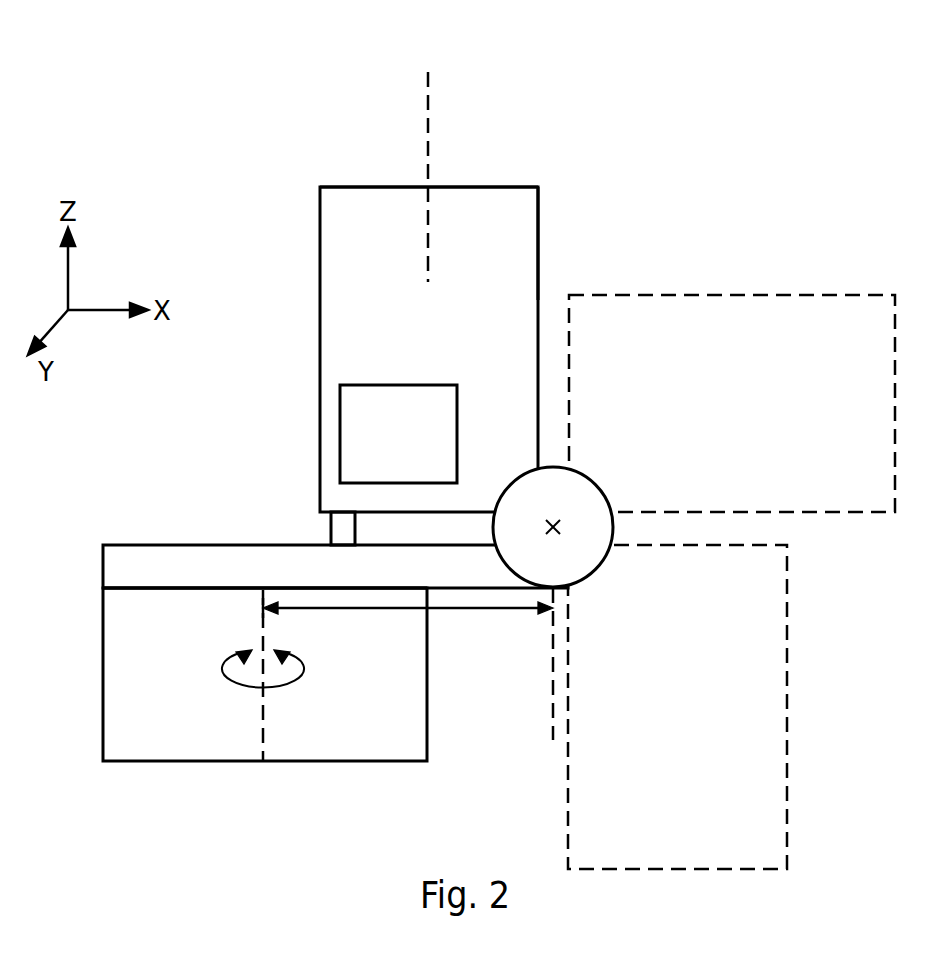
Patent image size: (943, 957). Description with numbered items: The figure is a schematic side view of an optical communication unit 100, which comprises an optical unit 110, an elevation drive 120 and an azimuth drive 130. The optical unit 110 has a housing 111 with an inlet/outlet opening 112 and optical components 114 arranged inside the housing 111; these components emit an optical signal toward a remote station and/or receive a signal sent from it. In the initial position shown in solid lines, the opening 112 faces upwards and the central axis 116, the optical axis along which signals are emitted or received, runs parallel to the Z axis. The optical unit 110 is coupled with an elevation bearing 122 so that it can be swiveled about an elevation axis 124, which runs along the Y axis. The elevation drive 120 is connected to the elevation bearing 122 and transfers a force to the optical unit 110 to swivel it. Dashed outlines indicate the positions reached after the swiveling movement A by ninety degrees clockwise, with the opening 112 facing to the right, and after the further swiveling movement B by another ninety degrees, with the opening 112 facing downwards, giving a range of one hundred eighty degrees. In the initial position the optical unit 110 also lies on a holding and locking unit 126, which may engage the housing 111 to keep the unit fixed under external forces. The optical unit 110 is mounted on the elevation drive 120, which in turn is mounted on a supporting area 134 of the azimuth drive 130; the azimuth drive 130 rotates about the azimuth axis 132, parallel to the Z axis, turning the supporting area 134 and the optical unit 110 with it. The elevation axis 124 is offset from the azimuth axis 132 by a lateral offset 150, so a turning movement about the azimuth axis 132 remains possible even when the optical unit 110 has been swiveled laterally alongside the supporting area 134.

The optical communication unit 100 is at (238, 92).
The optical unit 110 is at (342, 242).
The housing 111 is at (538, 197).
The inlet/outlet opening 112 is at (488, 170).
The optical components 114 is at (386, 400).
The central axis 116 is at (428, 137).
The elevation drive 120 is at (217, 563).
The elevation bearing 122 is at (585, 583).
The elevation axis 124 is at (548, 531).
The holding and locking unit 126 is at (345, 528).
The azimuth drive 130 is at (155, 650).
The azimuth axis 132 is at (262, 662).
The supporting area 134 is at (150, 570).
The lateral offset 150 is at (485, 608).
The swiveling movement A is at (580, 200).
The swiveling movement B is at (885, 538).